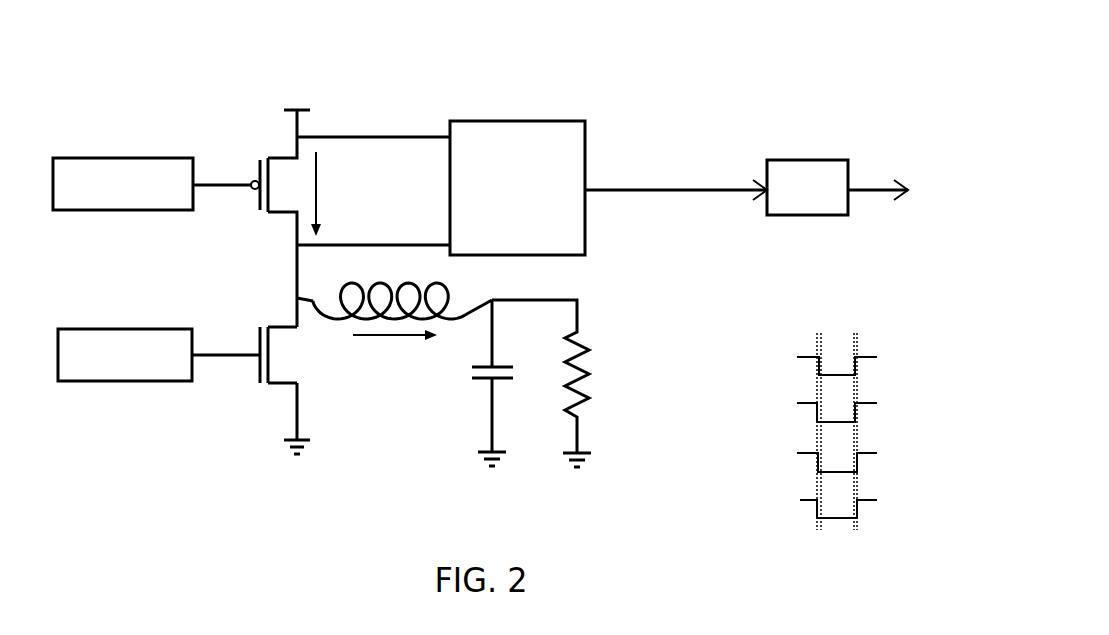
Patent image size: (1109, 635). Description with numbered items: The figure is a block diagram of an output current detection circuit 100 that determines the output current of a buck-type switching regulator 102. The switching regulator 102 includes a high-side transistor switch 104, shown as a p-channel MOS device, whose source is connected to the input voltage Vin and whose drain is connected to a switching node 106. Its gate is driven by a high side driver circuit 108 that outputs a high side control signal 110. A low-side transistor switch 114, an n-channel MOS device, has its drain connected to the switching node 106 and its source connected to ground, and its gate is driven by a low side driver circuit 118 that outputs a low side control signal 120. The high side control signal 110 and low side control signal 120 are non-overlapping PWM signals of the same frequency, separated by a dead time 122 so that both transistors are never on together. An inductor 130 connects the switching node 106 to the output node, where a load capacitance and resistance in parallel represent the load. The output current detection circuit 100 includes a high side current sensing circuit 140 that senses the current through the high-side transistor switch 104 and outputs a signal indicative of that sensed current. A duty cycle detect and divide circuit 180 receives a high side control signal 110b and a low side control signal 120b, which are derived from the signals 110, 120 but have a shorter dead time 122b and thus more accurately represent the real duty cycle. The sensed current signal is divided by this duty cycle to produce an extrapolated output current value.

The output current detection circuit 100 is at (633, 85).
The switching regulator 102 is at (155, 100).
The high-side transistor switch 104 is at (263, 160).
The switching node 106 is at (297, 296).
The high side driver circuit 108 is at (130, 212).
The high side control signal 110 is at (212, 185).
The high side control signal 110b is at (773, 150).
The low-side transistor switch 114 is at (262, 385).
The low side driver circuit 118 is at (95, 382).
The low side control signal 120 is at (217, 356).
The low side control signal 120b is at (835, 150).
The dead time 122 is at (853, 333).
The dead time 122b is at (818, 527).
The inductor 130 is at (453, 292).
The high side current sensing circuit 140 is at (482, 121).
The duty cycle detect and divide circuit 180 is at (778, 215).